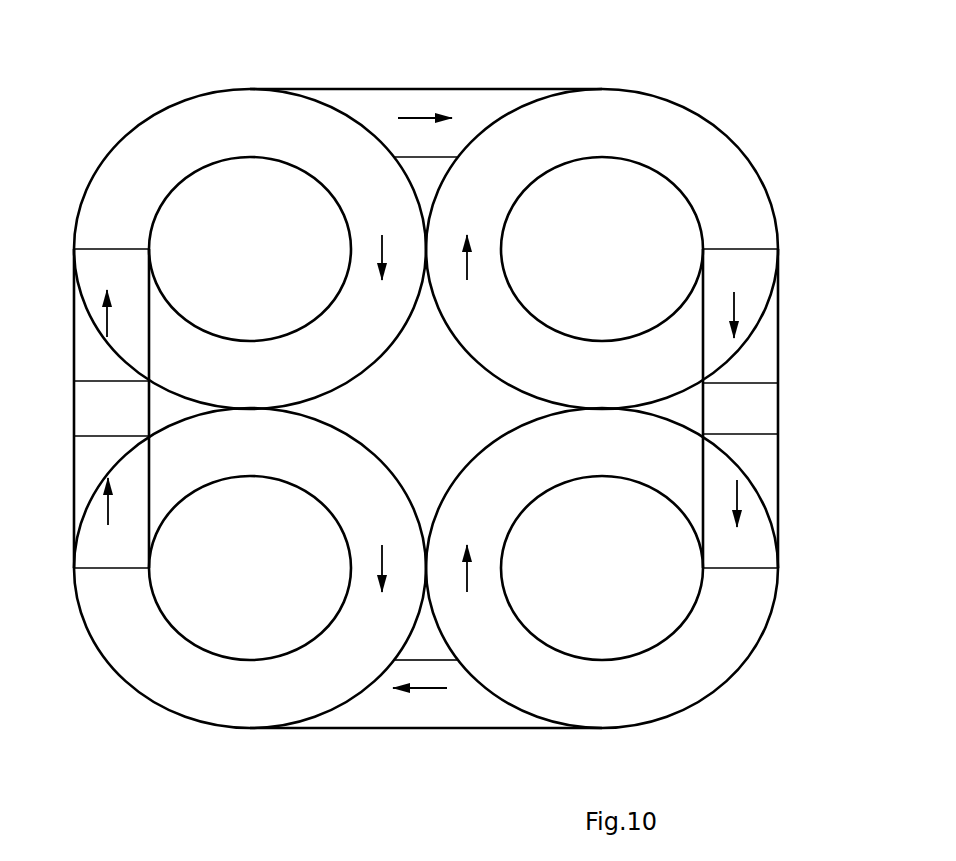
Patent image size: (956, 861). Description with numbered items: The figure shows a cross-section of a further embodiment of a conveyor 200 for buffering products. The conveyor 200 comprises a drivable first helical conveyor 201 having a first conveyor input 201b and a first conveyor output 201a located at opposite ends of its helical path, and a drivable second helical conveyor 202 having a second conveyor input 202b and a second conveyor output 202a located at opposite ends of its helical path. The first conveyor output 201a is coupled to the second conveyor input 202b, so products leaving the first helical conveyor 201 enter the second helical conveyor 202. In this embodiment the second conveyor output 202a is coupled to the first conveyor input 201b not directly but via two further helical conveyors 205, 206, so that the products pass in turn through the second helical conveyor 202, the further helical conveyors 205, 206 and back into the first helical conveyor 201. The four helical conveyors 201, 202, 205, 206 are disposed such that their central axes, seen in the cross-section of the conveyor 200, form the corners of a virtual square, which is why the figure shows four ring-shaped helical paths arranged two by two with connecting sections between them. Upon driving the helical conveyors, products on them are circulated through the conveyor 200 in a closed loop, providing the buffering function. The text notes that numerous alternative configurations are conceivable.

The conveyor 200 is at (436, 68).
The further helical conveyor 205 is at (115, 192).
The further helical conveyor 206 is at (733, 195).
The second helical conveyor 202 is at (115, 650).
The first helical conveyor 201 is at (735, 650).
The second conveyor output 202a is at (105, 395).
The first conveyor input 201b is at (755, 393).
The second conveyor input 202b is at (383, 698).
The first conveyor output 201a is at (462, 702).